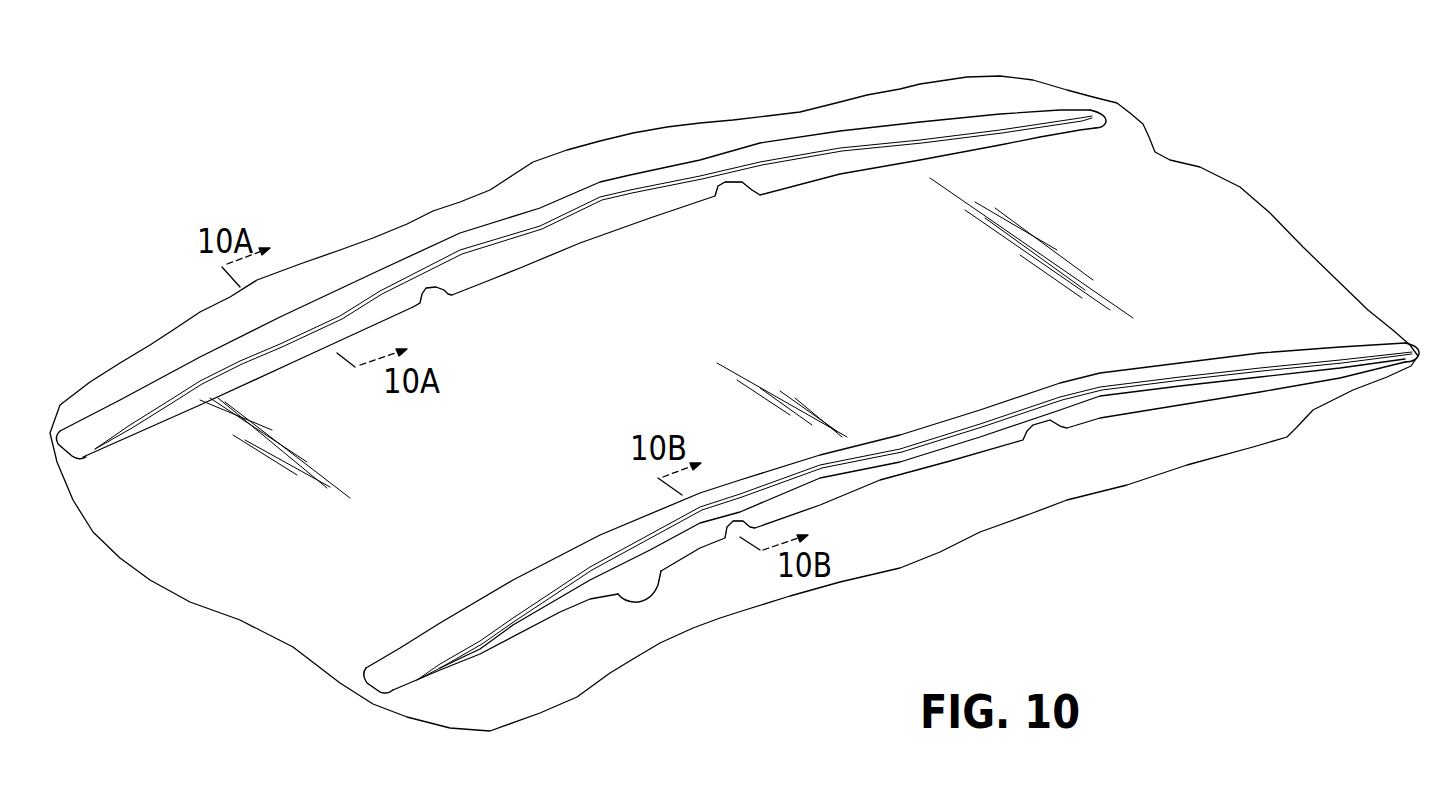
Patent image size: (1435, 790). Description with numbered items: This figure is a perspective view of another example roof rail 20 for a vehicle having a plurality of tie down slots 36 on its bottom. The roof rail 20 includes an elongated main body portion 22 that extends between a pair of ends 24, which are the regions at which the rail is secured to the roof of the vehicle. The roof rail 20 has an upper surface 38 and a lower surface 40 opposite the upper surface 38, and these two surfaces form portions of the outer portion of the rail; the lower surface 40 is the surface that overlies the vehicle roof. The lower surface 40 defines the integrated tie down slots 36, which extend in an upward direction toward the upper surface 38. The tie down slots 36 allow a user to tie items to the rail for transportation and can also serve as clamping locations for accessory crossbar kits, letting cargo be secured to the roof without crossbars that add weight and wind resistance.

The roof rail 20 is at (964, 116).
The elongated main body portion 22 is at (616, 217).
The ends 24 is at (217, 363).
The tie down slots 36 is at (717, 193).
The upper surface 38 is at (527, 207).
The lower surface 40 is at (420, 300).